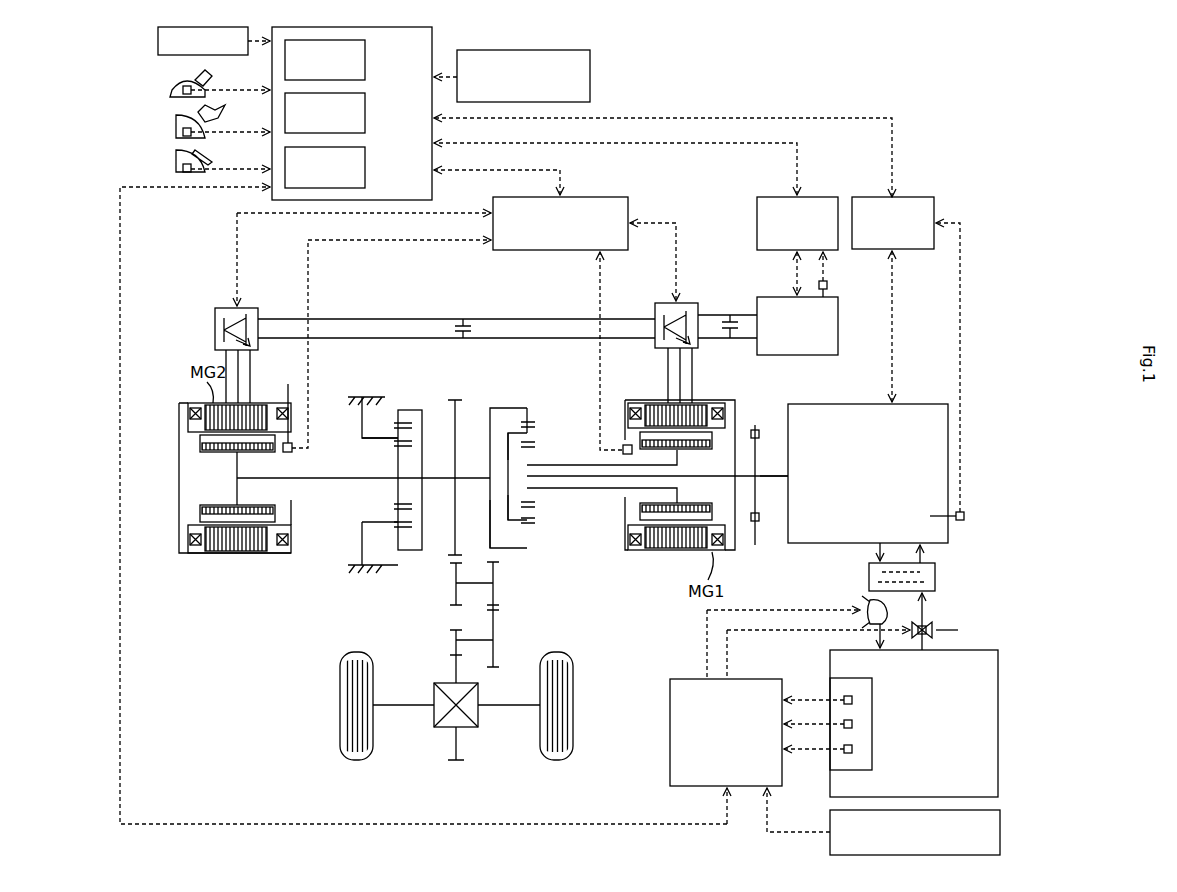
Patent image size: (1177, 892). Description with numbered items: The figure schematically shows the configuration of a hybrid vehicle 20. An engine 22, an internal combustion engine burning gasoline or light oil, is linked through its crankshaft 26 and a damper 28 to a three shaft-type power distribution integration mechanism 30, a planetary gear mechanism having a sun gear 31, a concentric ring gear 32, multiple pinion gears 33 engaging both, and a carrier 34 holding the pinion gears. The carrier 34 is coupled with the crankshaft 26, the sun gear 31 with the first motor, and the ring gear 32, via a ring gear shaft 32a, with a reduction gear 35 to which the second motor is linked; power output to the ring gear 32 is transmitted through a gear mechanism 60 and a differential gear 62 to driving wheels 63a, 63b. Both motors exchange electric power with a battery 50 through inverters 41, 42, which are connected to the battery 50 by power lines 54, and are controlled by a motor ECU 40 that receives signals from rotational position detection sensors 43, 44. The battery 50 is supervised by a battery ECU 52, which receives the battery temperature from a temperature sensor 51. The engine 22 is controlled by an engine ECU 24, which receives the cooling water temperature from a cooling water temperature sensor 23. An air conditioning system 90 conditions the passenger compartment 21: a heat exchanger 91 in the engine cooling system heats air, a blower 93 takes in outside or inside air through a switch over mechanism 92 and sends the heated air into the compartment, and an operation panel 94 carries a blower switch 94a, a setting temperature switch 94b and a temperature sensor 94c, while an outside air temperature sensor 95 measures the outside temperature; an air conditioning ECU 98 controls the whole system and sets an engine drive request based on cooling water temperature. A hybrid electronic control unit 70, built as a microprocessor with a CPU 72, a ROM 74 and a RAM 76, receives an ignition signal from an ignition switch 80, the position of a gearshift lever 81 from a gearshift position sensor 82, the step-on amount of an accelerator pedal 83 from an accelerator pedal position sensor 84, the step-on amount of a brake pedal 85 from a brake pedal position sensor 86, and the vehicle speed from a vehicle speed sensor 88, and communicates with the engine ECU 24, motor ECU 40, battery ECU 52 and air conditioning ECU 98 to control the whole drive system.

The hybrid vehicle 20 is at (704, 70).
The passenger compartment 21 is at (998, 690).
The engine 22 is at (845, 404).
The cooling water temperature sensor 23 is at (964, 516).
The engine ECU 24 is at (893, 197).
The crankshaft 26 is at (772, 478).
The damper 28 is at (756, 521).
The power distribution integration mechanism 30 is at (531, 392).
The sun gear 31 is at (537, 492).
The ring gear 32 is at (537, 536).
The ring gear shaft 32a is at (446, 478).
The pinion gears 33 is at (537, 515).
The carrier 34 is at (500, 445).
The reduction gear 35 is at (401, 392).
The motor ECU 40 is at (575, 197).
The inverter 41 is at (690, 303).
The inverter 42 is at (250, 308).
The rotational position detection sensor 43 is at (626, 445).
The rotational position detection sensor 44 is at (290, 346).
The battery 50 is at (800, 355).
The temperature sensor 51 is at (827, 285).
The battery ECU 52 is at (766, 197).
The power lines 54 is at (513, 338).
The gear mechanism 60 is at (535, 624).
The differential gear 62 is at (478, 720).
The driving wheel 63a is at (340, 740).
The driving wheel 63b is at (573, 740).
The hybrid electronic control unit 70 is at (432, 33).
The CPU 72 is at (365, 62).
The ROM 74 is at (365, 115).
The RAM 76 is at (365, 168).
The ignition switch 80 is at (158, 36).
The gearshift lever 81 is at (204, 72).
The gearshift position sensor 82 is at (183, 88).
The accelerator pedal 83 is at (203, 110).
The accelerator pedal position sensor 84 is at (183, 130).
The brake pedal 85 is at (197, 152).
The brake pedal position sensor 86 is at (183, 168).
The vehicle speed sensor 88 is at (590, 75).
The air conditioning system 90 is at (690, 647).
The heat exchanger 91 is at (935, 575).
The switch over mechanism 92 is at (930, 622).
The blower 93 is at (870, 608).
The operation panel 94 is at (850, 770).
The blower switch 94a is at (852, 700).
The setting temperature switch 94b is at (852, 724).
The temperature sensor 94c is at (852, 749).
The outside air temperature sensor 95 is at (1000, 832).
The air conditioning ECU 98 is at (670, 740).